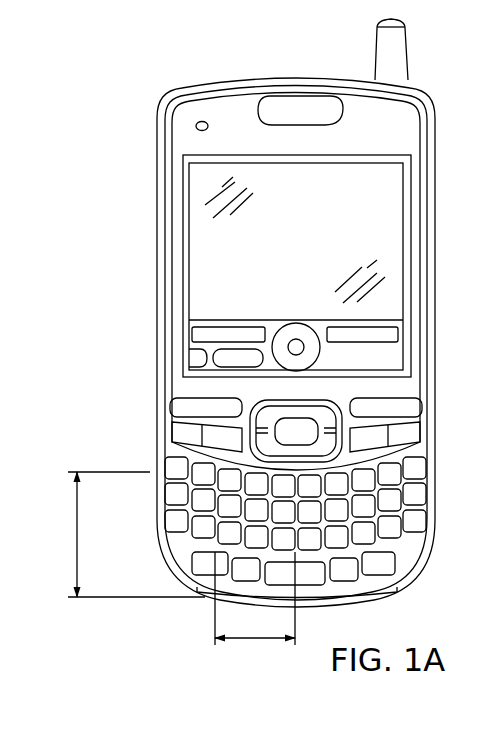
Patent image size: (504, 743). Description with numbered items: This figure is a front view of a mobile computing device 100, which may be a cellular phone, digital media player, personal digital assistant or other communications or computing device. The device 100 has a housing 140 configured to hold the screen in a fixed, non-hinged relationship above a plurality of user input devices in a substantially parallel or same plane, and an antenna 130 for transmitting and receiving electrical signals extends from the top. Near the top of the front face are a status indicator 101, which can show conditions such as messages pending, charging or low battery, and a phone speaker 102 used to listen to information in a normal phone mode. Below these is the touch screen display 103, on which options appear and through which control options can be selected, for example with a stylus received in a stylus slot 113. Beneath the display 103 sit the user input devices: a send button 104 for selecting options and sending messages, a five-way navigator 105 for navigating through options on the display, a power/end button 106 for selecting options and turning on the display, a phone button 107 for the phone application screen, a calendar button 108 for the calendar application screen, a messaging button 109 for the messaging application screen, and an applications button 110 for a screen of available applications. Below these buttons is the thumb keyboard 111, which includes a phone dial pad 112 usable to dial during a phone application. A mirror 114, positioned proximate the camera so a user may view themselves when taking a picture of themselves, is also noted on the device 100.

The mobile computing device 100 is at (115, 313).
The status indicator 101 is at (188, 117).
The phone speaker 102 is at (300, 90).
The touch screen display 103 is at (288, 247).
The send button 104 is at (200, 395).
The 5-way navigator 105 is at (322, 415).
The power/end button 106 is at (392, 394).
The phone button 107 is at (165, 442).
The calendar button 108 is at (230, 460).
The messaging button 109 is at (360, 462).
The applications button 110 is at (430, 448).
The thumb keyboard 111 is at (70, 535).
The phone dial pad 112 is at (257, 645).
The stylus slot 113 is at (495, 208).
The mirror 114 is at (495, 312).
The antenna 130 is at (408, 68).
The housing 140 is at (503, 604).